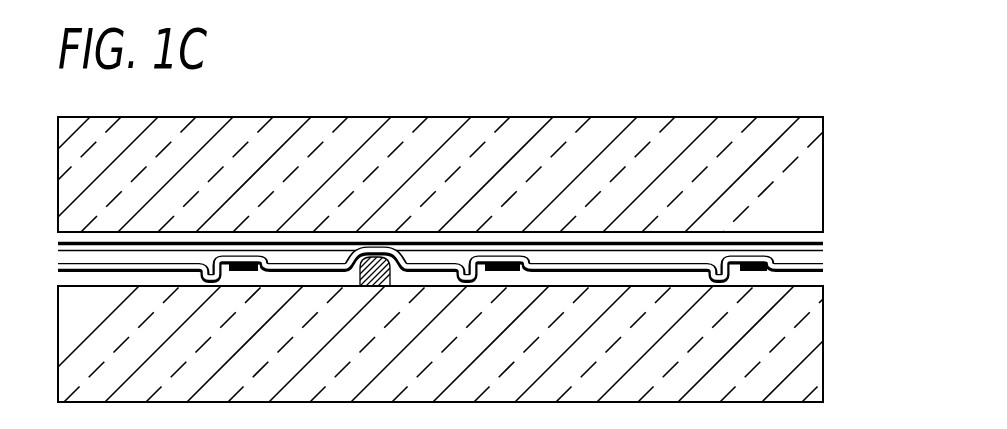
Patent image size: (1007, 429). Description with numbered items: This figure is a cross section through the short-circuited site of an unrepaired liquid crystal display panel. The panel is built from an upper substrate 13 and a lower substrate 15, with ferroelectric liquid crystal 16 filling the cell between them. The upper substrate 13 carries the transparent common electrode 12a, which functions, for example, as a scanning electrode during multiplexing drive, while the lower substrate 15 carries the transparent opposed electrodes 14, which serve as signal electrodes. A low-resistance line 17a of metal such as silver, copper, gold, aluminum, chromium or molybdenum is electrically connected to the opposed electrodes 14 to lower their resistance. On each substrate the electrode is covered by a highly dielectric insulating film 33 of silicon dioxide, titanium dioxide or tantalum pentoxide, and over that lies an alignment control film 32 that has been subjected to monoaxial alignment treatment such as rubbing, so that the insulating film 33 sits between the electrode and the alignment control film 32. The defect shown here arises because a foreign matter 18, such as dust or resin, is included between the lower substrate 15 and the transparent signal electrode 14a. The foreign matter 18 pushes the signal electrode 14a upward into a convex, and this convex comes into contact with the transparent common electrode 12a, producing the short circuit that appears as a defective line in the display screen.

The upper substrate 13 is at (823, 156).
The lower substrate 15 is at (823, 357).
The transparent common electrode 12a is at (823, 237).
The ferroelectric liquid crystal 16 is at (823, 259).
The transparent opposed electrodes 14 is at (823, 282).
The transparent signal electrode 14a is at (312, 268).
The low-resistance line 17a is at (747, 257).
The foreign matter 18 is at (383, 250).
The insulating film 33 is at (58, 231).
The alignment control film 32 is at (58, 272).